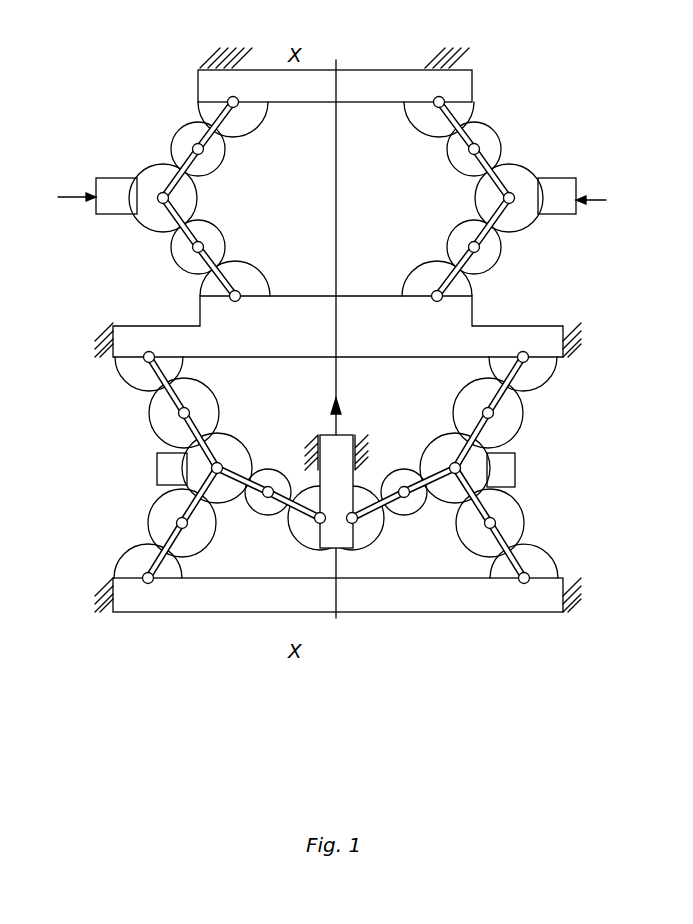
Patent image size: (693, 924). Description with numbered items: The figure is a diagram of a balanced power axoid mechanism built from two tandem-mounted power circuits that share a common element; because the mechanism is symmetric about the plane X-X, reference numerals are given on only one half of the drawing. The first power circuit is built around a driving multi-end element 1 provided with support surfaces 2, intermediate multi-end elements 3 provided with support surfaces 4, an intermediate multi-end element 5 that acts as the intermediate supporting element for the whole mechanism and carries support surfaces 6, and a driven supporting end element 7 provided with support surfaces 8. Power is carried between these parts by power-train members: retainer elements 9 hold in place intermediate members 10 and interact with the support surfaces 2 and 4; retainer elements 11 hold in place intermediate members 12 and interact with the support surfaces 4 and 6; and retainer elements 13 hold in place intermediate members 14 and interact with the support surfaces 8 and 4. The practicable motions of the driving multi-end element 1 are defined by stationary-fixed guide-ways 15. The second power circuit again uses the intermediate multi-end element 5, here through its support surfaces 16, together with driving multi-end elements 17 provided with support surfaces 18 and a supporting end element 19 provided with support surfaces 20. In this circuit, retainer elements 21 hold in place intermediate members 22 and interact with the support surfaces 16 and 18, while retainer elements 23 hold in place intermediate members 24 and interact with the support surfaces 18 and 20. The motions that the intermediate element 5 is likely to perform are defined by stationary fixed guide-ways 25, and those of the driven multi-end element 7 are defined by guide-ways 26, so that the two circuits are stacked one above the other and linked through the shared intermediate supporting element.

The driving multi-end element 1 is at (343, 537).
The support surfaces 2 is at (373, 523).
The intermediate multi-end elements 3 is at (505, 467).
The support surfaces 4 is at (515, 472).
The intermediate multi-end element 5 is at (573, 362).
The support surfaces 6 is at (537, 373).
The driven supporting end element 7 is at (540, 572).
The support surfaces 8 is at (548, 580).
The retainer elements 9 is at (533, 595).
The intermediate members 10 is at (395, 510).
The retainer elements 11 is at (522, 390).
The intermediate members 12 is at (508, 420).
The retainer elements 13 is at (573, 597).
The intermediate members 14 is at (510, 527).
The stationary-fixed guide-ways 15 is at (420, 500).
The support surfaces 16 is at (460, 287).
The driving multi-end elements 17 is at (567, 197).
The support surfaces 18 is at (525, 213).
The supporting end element 19 is at (353, 92).
The support surfaces 20 is at (457, 110).
The retainer elements 21 is at (500, 220).
The intermediate members 22 is at (490, 248).
The retainer elements 23 is at (500, 183).
The intermediate members 24 is at (488, 142).
The stationary fixed guide-ways 25 is at (543, 343).
The guide-ways 26 is at (113, 610).